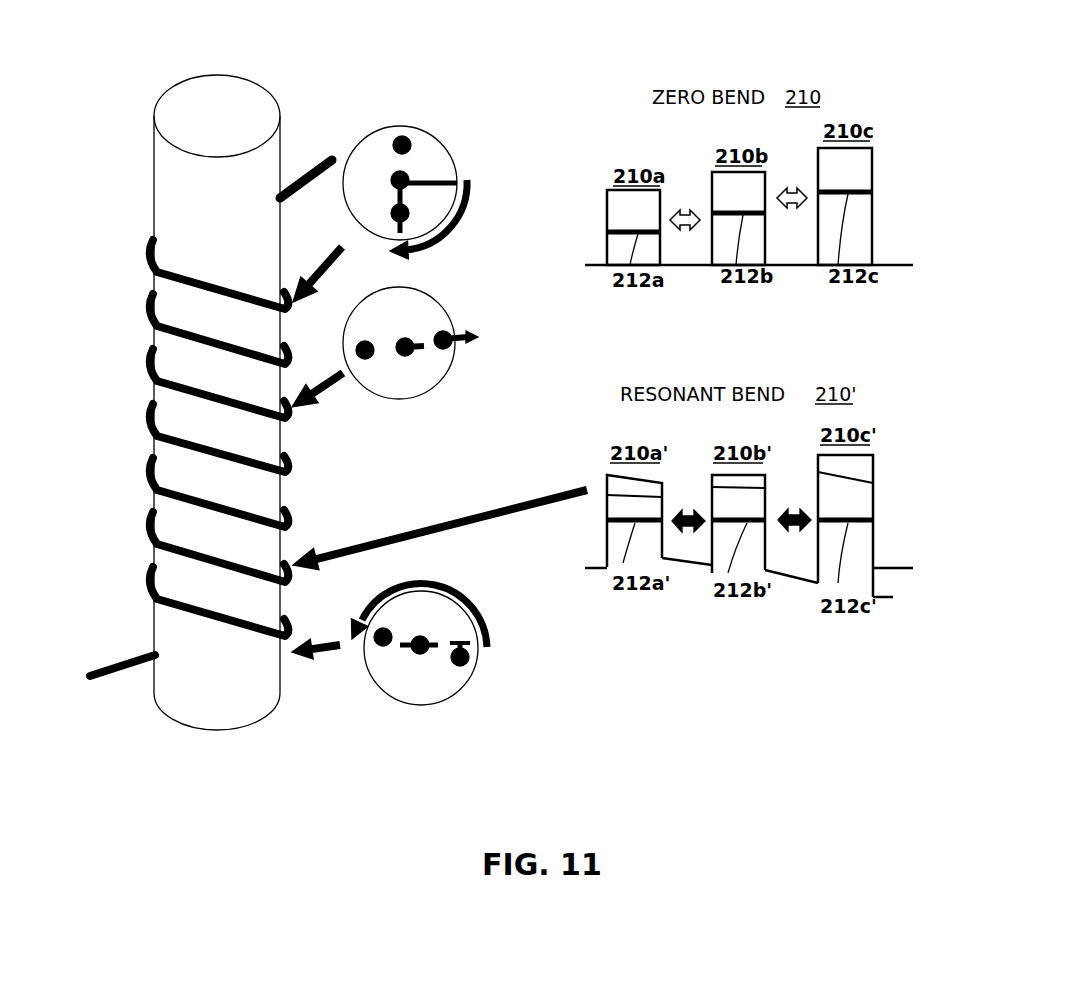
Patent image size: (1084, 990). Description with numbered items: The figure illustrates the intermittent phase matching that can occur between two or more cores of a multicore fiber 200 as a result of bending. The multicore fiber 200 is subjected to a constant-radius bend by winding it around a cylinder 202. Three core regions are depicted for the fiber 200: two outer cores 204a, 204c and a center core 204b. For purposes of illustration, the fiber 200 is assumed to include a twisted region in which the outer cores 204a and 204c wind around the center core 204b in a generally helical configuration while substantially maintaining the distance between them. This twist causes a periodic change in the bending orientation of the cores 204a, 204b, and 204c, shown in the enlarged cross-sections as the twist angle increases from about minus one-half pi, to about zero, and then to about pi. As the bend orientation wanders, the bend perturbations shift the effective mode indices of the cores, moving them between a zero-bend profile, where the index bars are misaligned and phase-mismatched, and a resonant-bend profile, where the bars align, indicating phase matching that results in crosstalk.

The multicore fiber 200 is at (308, 165).
The cylinder 202 is at (237, 198).
The outer core 204a is at (413, 137).
The center core 204b is at (406, 174).
The outer core 204c is at (407, 205).